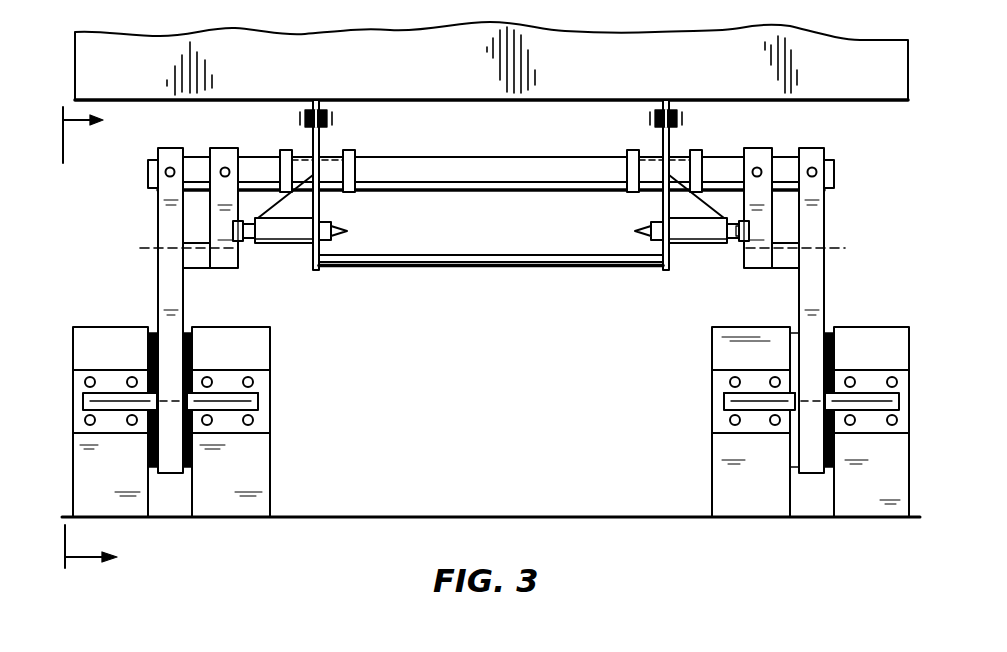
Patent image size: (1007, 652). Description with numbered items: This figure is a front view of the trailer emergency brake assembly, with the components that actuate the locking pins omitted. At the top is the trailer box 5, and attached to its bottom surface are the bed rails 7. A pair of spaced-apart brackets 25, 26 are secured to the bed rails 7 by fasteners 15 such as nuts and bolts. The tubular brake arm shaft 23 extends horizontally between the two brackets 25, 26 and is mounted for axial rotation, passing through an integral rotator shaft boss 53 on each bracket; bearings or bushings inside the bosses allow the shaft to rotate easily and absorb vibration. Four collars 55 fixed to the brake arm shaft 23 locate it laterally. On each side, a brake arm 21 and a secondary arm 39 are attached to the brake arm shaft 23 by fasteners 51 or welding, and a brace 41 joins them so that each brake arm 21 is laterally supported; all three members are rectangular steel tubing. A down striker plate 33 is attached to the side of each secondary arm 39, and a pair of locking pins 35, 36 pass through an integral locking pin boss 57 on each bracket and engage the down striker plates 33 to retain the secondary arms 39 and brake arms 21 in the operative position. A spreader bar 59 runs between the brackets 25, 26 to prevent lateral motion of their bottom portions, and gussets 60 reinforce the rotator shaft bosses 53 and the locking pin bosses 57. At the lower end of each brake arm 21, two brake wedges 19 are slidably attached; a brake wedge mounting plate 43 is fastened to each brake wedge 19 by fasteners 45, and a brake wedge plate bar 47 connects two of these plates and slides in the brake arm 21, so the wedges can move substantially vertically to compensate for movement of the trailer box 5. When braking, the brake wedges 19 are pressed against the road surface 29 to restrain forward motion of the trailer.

The trailer box 5 is at (99, 340).
The bed rails 7 is at (323, 112).
The fasteners 15 is at (330, 125).
The brake wedges 19 is at (136, 487).
The brake arm 21 is at (158, 290).
The brake arm shaft 23 is at (463, 157).
The bracket 25 is at (670, 108).
The bracket 26 is at (312, 108).
The road surface 29 is at (492, 517).
The down striker plate 33 is at (233, 230).
The locking pin 35 is at (770, 248).
The locking pin 36 is at (477, 252).
The secondary arm 39 is at (172, 200).
The brace 41 is at (198, 262).
The brake wedge mounting plate 43 is at (110, 385).
The fasteners 45 is at (208, 424).
The brake wedge plate bar 47 is at (196, 400).
The fasteners 51 is at (170, 167).
The rotator shaft boss 53 is at (338, 158).
The collars 55 is at (283, 152).
The locking pin boss 57 is at (317, 270).
The spreader bar 59 is at (487, 265).
The gussets 60 is at (300, 206).